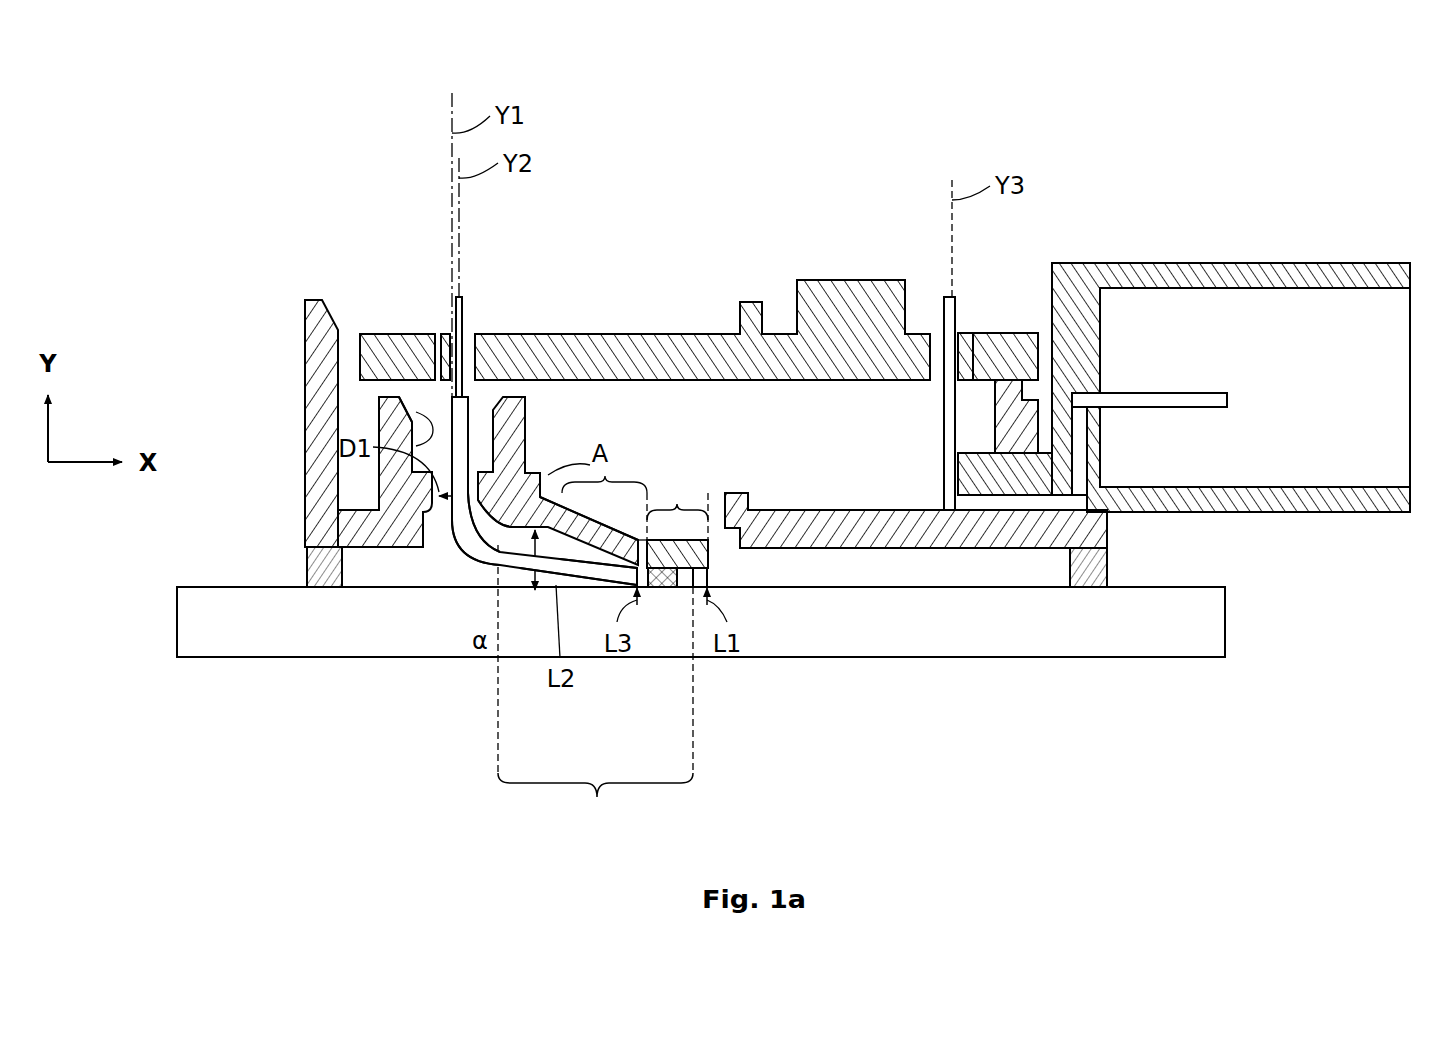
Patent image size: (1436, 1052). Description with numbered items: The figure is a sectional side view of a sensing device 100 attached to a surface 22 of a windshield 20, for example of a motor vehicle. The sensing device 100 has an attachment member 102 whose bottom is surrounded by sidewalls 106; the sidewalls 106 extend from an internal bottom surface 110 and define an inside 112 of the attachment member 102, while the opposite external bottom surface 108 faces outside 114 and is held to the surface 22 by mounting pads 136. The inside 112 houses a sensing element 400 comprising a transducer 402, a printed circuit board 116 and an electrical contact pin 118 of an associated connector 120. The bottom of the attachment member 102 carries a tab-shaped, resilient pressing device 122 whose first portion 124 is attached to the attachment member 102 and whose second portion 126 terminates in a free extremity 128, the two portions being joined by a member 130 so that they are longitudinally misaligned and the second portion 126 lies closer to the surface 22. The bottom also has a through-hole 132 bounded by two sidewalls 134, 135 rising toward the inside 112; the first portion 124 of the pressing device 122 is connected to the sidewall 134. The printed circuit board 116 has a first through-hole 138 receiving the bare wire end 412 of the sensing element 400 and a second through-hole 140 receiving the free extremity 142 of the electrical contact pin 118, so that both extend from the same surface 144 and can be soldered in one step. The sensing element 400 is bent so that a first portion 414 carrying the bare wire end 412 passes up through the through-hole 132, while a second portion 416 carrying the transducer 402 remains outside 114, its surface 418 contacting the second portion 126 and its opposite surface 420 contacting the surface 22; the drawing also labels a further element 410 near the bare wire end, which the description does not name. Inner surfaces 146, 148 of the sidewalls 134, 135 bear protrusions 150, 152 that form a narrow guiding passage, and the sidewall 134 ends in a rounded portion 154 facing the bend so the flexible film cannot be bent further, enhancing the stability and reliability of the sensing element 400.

The windshield 20 is at (1225, 622).
The surface 22 is at (1178, 587).
The sensing device 100 is at (1043, 92).
The attachment member 102 is at (315, 300).
The sidewalls 106 is at (318, 413).
The external bottom surface 108 is at (935, 548).
The internal bottom surface 110 is at (858, 510).
The inside 112 is at (797, 428).
The outside 114 is at (890, 580).
The printed circuit board 116 is at (405, 347).
The electrical contact pin 118 is at (944, 418).
The connector 120 is at (1280, 315).
The pressing device 122 is at (640, 463).
The first portion 124 is at (548, 470).
The second portion 126 is at (677, 508).
The free extremity 128 is at (712, 557).
The member 130 is at (618, 480).
The through-hole 132 is at (464, 556).
The sidewall 134 is at (512, 420).
The sidewall 135 is at (410, 416).
The mounting pads 136 is at (305, 568).
The first through-hole 138 is at (480, 336).
The second through-hole 140 is at (958, 357).
The free extremity 142 is at (955, 300).
The surface 144 is at (698, 334).
The inner surface 146 is at (490, 398).
The inner surface 148 is at (416, 412).
The protrusion 150 is at (447, 550).
The protrusion 152 is at (445, 490).
The rounded portion 154 is at (520, 560).
The sensing element 400 is at (440, 540).
The transducer 402 is at (655, 580).
The nozzle body 410 is at (463, 313).
The bare wire end 412 is at (463, 323).
The first portion 414 is at (412, 420).
The second portion 416 is at (632, 786).
The surface 418 is at (705, 563).
The surface 420 is at (556, 572).